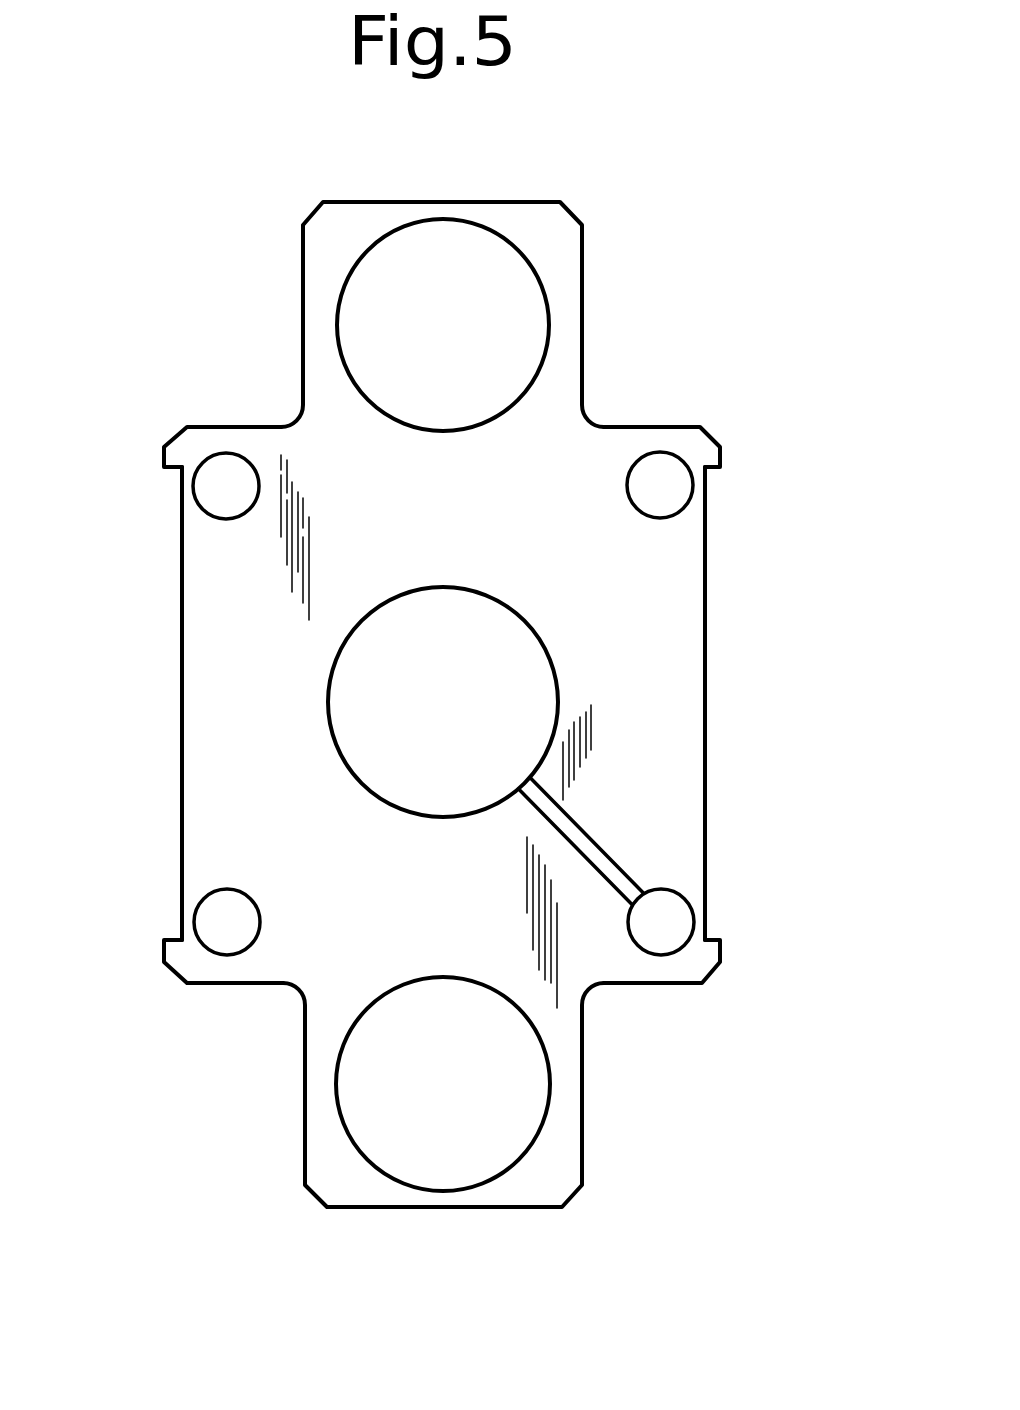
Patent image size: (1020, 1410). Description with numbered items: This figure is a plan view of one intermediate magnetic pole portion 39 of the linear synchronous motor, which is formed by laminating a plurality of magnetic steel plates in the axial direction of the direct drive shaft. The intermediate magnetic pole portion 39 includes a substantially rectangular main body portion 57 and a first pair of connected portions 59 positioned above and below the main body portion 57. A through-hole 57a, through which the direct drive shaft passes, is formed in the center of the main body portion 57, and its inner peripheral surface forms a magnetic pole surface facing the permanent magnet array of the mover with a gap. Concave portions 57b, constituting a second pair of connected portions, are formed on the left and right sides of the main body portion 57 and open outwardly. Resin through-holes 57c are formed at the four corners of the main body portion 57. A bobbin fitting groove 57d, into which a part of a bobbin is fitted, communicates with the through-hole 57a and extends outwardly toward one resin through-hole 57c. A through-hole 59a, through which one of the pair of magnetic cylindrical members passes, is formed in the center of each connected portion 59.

The intermediate magnetic pole portion 39 is at (252, 359).
The main body portion 57 is at (290, 632).
The through-hole 57a is at (474, 594).
The concave portion 57b is at (182, 756).
The resin through-hole 57c is at (232, 462).
The bobbin fitting groove 57d is at (607, 863).
The first pair of connected portions 59 is at (317, 279).
The through-hole 59a is at (453, 221).